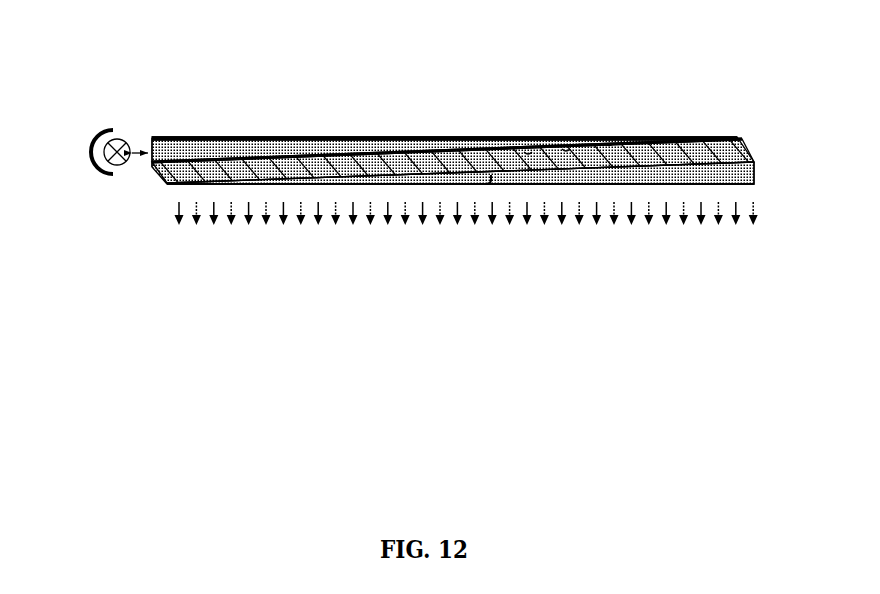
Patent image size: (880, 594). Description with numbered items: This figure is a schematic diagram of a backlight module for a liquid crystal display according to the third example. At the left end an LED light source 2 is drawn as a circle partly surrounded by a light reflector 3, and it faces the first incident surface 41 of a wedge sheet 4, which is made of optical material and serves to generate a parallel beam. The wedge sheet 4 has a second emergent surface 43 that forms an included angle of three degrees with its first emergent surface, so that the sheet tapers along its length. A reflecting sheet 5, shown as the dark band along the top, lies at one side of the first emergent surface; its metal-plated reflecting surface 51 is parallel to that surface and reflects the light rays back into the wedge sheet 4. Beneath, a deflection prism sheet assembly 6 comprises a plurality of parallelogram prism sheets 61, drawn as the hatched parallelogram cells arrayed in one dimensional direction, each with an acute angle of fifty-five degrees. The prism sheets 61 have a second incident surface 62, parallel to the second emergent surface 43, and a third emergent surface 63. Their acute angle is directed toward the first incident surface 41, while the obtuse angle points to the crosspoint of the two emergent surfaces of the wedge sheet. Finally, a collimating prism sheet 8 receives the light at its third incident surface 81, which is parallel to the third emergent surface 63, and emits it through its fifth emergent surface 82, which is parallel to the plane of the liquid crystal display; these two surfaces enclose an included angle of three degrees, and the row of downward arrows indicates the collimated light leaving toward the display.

The LED light source 2 is at (120, 143).
The light reflector 3 is at (91, 156).
The wedge sheet 4 is at (662, 134).
The first incident surface 41 is at (144, 155).
The second emergent surface 43 is at (343, 147).
The reflecting sheet 5 is at (250, 134).
The reflecting surface 51 is at (313, 135).
The deflection prism sheet assembly 6 is at (158, 178).
The parallelogram prism sheets 61 is at (733, 149).
The second incident surface 62 is at (495, 149).
The third emergent surface 63 is at (263, 180).
The collimating prism sheet 8 is at (737, 171).
The third incident surface 81 is at (662, 163).
The fifth emergent surface 82 is at (702, 185).